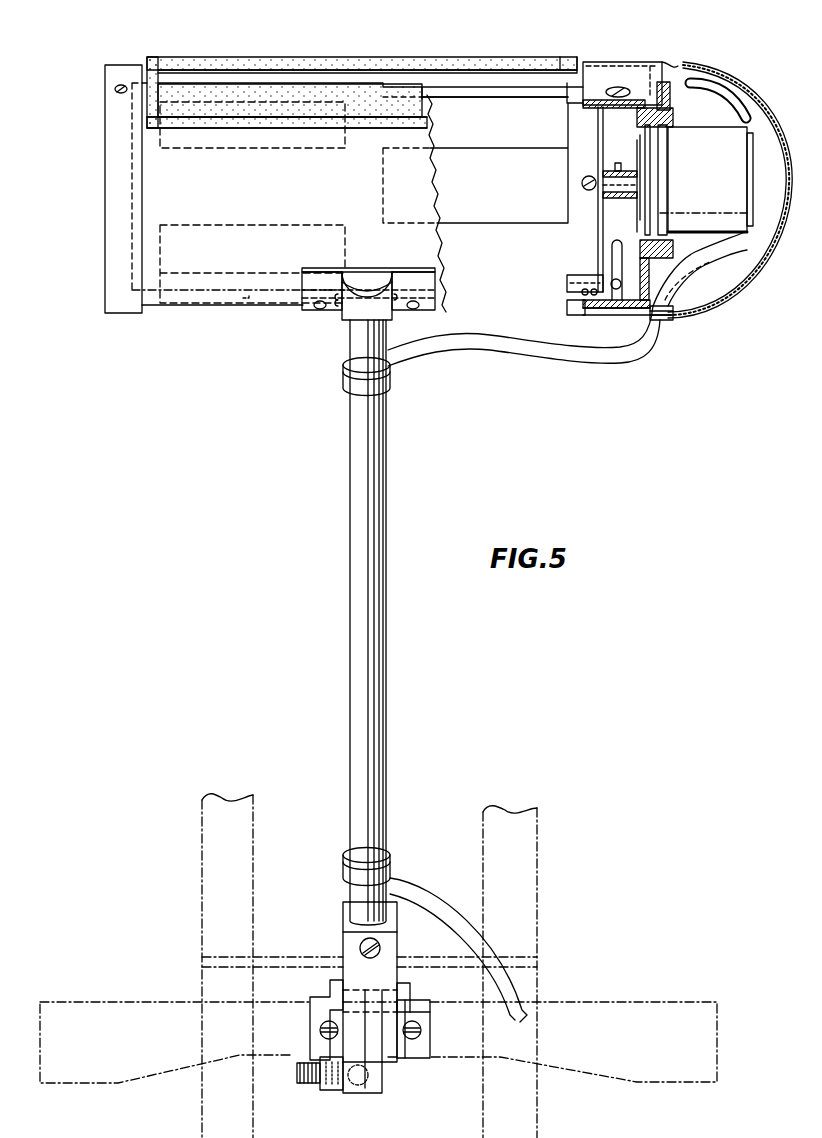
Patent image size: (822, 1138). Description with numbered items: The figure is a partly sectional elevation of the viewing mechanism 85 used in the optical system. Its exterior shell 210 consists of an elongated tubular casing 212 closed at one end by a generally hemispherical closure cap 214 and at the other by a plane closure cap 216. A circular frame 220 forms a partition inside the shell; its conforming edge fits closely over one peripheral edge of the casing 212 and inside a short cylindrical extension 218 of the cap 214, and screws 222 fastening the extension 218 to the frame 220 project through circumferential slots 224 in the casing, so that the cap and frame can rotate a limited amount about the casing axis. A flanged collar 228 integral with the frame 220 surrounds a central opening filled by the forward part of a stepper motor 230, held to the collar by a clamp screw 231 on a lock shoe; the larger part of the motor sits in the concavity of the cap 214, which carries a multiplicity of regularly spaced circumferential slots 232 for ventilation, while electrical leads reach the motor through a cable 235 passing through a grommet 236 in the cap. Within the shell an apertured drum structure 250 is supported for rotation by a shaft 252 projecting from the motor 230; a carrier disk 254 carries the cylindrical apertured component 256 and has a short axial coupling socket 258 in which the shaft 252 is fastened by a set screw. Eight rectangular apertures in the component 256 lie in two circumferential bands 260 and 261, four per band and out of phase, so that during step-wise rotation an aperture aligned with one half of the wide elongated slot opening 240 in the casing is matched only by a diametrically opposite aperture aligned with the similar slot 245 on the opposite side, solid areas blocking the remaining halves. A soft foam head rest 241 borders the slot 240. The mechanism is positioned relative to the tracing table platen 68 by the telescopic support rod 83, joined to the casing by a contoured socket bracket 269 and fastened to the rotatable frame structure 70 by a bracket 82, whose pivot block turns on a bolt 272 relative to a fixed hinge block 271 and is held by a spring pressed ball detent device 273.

The viewing mechanism 85 is at (232, 55).
The slot opening 240 is at (286, 74).
The drum structure 250 is at (359, 70).
The head rest 241 is at (529, 62).
The screws 222 is at (619, 87).
The clamp screw 231 is at (665, 82).
The circumferential slots 232 is at (722, 92).
The hemispherical closure cap 214 is at (768, 139).
The plane closure cap 216 is at (115, 114).
The circumferential band of apertures 261 is at (300, 147).
The circumferential band of apertures 260 is at (521, 100).
The cylindrical apertured component 256 is at (468, 138).
The carrier disk 254 is at (597, 134).
The axial coupling socket 258 is at (609, 169).
The stepper motor 230 is at (716, 168).
The shaft 252 is at (619, 198).
The circumferential slots 224 is at (611, 252).
The flanged collar 228 is at (672, 248).
The tubular casing 212 is at (580, 302).
The cylindrical extension 218 is at (592, 318).
The circular frame 220 is at (636, 308).
The grommet 236 is at (670, 320).
The exterior shell 210 is at (183, 306).
The slot 245 is at (257, 303).
The bracket 269 is at (352, 322).
The cable 235 is at (462, 340).
The telescopic support rod 83 is at (357, 495).
The bracket 82 is at (338, 931).
The tracing table platen 68 is at (426, 962).
The rotatable frame structure 70 is at (615, 1012).
The bolt 272 is at (333, 993).
The hinge block 271 is at (414, 1045).
The spring pressed ball detent device 273 is at (353, 1093).